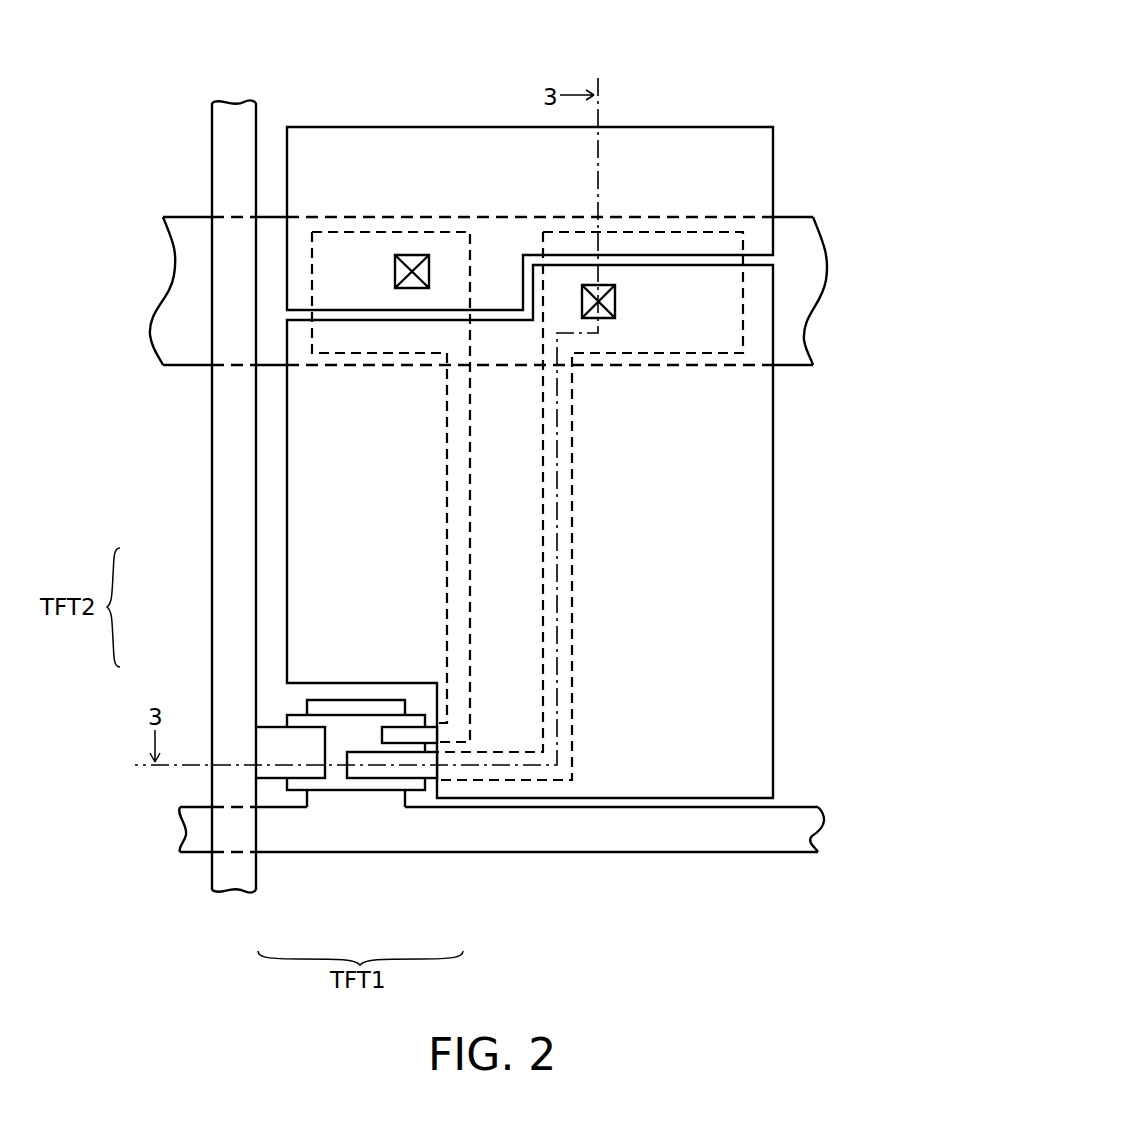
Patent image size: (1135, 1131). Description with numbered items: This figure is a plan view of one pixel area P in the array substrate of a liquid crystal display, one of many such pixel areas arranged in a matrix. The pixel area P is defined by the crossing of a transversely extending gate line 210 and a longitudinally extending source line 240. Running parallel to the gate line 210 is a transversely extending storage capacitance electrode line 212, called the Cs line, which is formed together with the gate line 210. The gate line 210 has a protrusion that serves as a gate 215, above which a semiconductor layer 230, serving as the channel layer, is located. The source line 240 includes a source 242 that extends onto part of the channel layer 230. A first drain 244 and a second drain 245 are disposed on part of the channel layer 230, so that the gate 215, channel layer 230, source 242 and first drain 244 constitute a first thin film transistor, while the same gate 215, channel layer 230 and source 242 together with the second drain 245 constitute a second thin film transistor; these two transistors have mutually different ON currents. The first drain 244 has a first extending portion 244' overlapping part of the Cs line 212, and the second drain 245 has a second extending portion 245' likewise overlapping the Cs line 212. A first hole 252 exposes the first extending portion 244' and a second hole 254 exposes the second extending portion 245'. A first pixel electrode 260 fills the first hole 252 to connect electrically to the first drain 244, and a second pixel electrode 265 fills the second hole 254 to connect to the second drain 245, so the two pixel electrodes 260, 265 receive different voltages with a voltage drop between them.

The pixel area P is at (785, 103).
The gate line 210 is at (803, 837).
The storage capacitance electrode line 212 is at (803, 283).
The gate 215 is at (323, 698).
The semiconductor layer 230 is at (295, 713).
The source line 240 is at (228, 878).
The source 242 is at (297, 738).
The first drain 244 is at (392, 851).
The first extending portion 244' is at (591, 423).
The second drain 245 is at (281, 645).
The second extending portion 245' is at (391, 404).
The first hole 252 is at (617, 298).
The second hole 254 is at (417, 255).
The first pixel electrode 260 is at (773, 542).
The second pixel electrode 265 is at (773, 176).